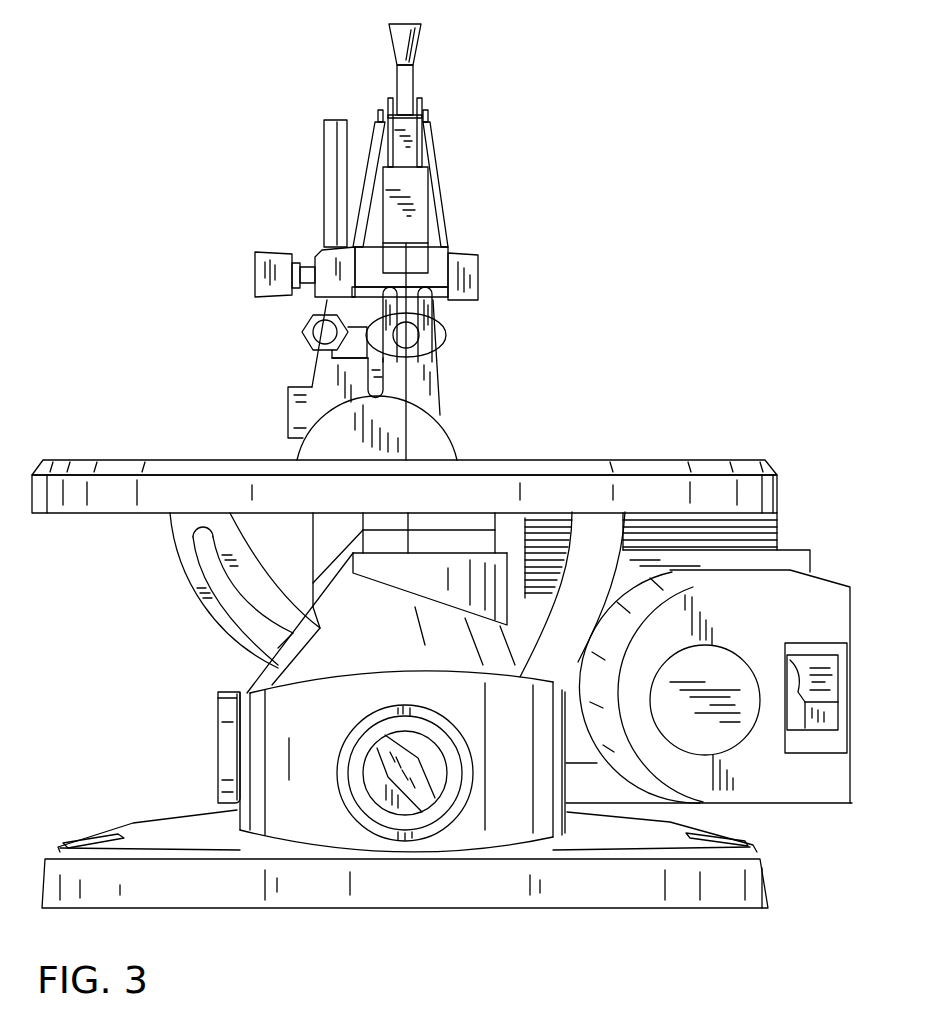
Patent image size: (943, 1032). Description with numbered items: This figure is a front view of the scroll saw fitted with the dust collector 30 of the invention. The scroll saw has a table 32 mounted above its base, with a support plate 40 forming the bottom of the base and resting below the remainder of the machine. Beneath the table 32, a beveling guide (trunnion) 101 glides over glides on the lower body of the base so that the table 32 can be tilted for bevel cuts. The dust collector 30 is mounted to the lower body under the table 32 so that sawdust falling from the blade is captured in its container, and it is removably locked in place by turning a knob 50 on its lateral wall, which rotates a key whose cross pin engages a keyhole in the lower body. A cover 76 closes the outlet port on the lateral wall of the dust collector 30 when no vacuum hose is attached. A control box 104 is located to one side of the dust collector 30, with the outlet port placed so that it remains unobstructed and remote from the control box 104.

The table 32 is at (572, 460).
The beveling guide (trunnion) 101 is at (205, 616).
The cover 76 is at (218, 737).
The dust collector 30 is at (313, 823).
The knob 50 is at (385, 798).
The support plate 40 is at (600, 833).
The control box 104 is at (775, 793).